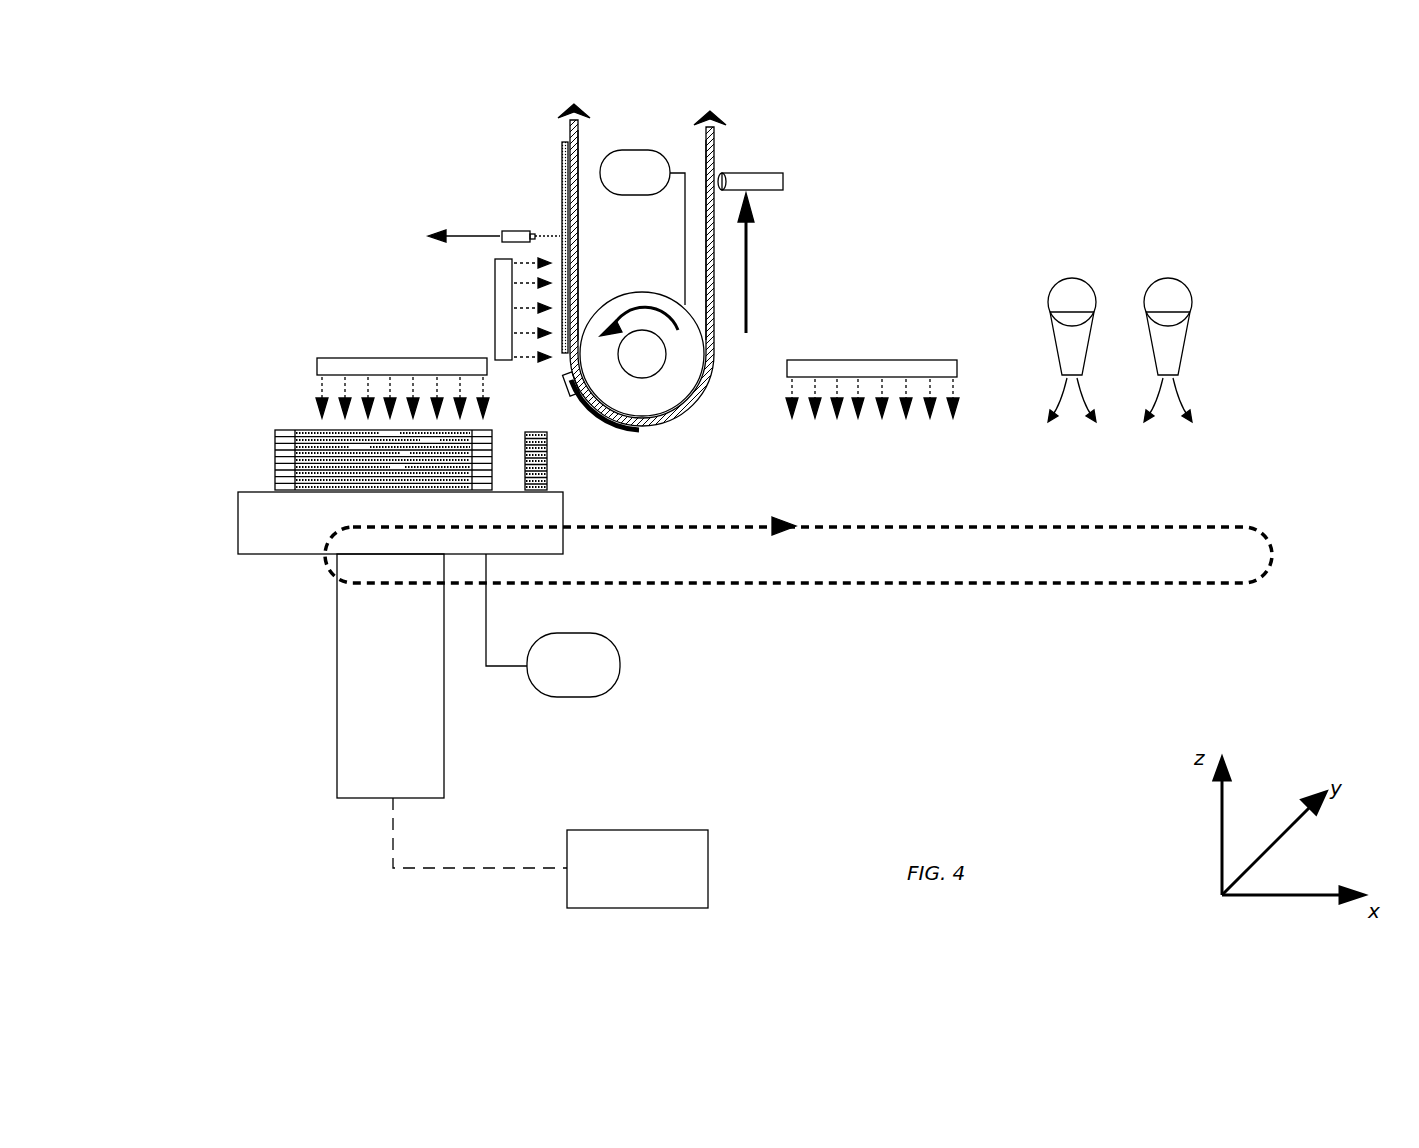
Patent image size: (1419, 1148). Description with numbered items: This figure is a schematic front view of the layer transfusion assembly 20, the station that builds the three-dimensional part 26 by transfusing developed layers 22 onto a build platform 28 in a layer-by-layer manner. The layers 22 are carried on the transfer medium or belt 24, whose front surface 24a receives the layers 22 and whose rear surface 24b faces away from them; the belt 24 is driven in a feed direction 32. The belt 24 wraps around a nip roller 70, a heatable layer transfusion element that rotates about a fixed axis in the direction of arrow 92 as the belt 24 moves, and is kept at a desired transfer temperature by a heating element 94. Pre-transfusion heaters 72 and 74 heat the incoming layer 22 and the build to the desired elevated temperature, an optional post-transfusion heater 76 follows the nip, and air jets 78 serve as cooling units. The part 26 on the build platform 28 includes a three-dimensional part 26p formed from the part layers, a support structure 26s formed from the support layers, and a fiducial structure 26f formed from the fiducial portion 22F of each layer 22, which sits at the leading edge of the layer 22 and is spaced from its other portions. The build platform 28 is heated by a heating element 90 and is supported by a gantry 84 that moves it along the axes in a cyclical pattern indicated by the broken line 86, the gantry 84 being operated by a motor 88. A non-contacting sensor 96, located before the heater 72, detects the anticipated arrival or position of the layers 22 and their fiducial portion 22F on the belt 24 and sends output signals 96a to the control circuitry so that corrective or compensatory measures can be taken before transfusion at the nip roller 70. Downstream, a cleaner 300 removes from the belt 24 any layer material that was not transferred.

The transfusion assembly 20 is at (1275, 616).
The layers 22 is at (554, 215).
The fiducial portion 22F is at (568, 390).
The transfer medium belt 24 is at (566, 124).
The front surface 24a is at (728, 160).
The rear surface 24b is at (586, 134).
The 3D part 26 is at (362, 432).
The 3D part 26p is at (310, 430).
The support structure 26s is at (275, 458).
The fiducial structure 26f is at (547, 432).
The build platform 28 is at (238, 525).
The feed direction 32 is at (750, 240).
The nip roller 70 is at (598, 303).
The pre-transfusion heater 72 is at (484, 276).
The pre-transfusion heater 74 is at (354, 348).
The post-transfusion heater 76 is at (864, 350).
The air jets 78 is at (1168, 278).
The gantry 84 is at (444, 728).
The broken line 86 is at (921, 586).
The motor 88 is at (708, 856).
The heating element 90 is at (620, 652).
The arrow 92 is at (661, 316).
The heating element 94 is at (623, 150).
The sensor 96 is at (501, 231).
The output signals 96a is at (462, 237).
The cleaner 300 is at (785, 172).